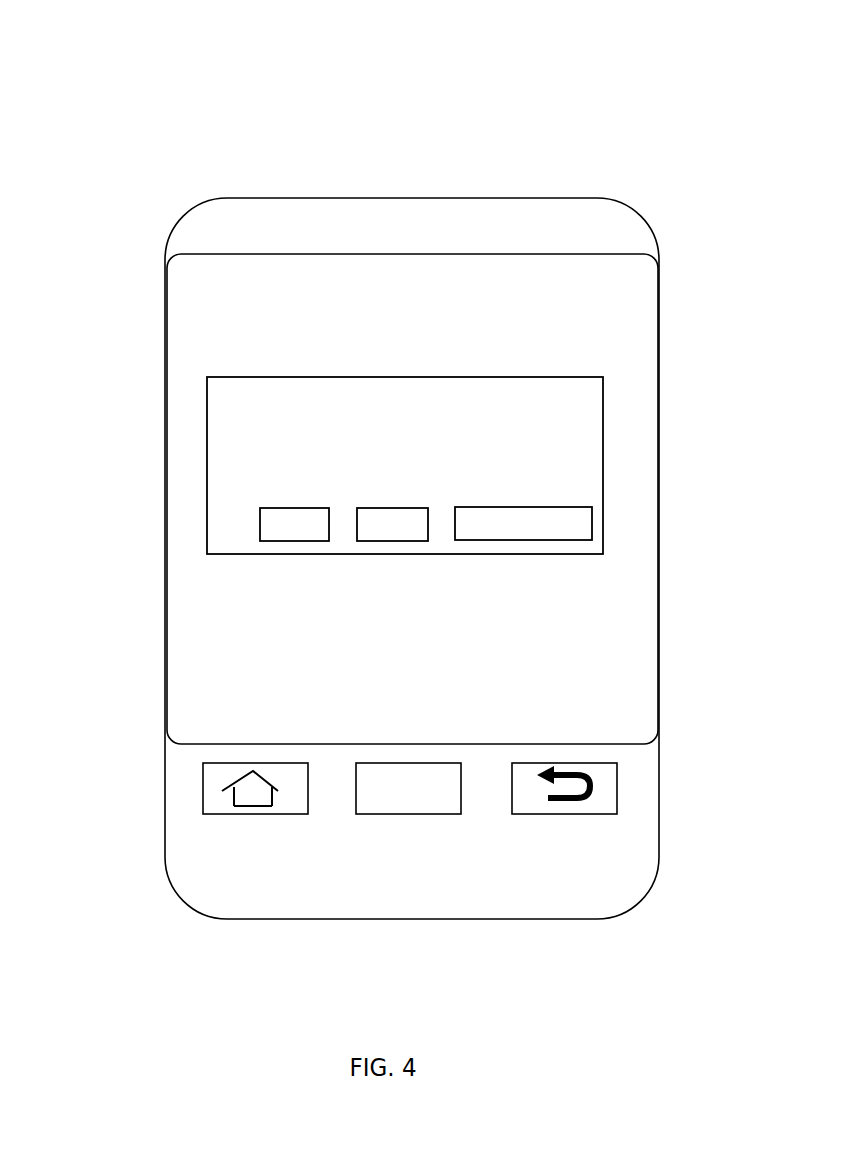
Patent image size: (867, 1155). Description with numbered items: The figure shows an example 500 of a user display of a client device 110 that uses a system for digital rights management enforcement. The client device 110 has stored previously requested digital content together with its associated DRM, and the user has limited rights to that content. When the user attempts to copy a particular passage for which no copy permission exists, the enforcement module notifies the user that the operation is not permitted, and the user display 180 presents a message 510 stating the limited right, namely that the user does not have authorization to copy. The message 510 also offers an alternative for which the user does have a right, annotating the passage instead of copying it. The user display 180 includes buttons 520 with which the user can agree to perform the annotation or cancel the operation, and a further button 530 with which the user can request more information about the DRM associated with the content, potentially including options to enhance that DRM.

The example 500 is at (400, 385).
The client device 110 is at (647, 224).
The user display 180 is at (637, 325).
The message 510 is at (587, 490).
The buttons 520 is at (385, 542).
The further button 530 is at (593, 535).